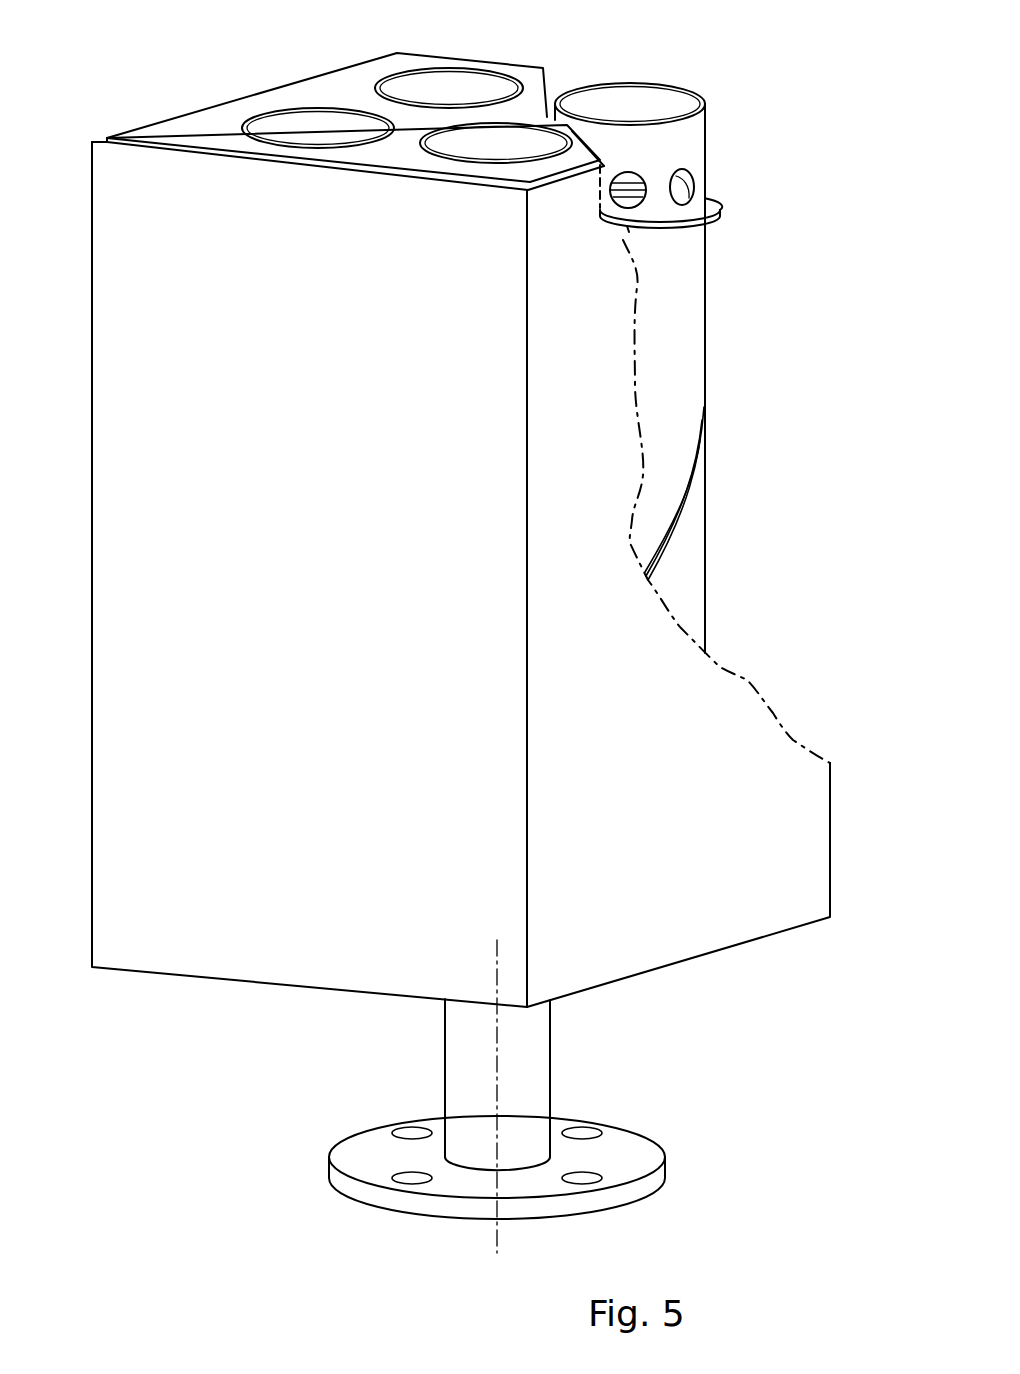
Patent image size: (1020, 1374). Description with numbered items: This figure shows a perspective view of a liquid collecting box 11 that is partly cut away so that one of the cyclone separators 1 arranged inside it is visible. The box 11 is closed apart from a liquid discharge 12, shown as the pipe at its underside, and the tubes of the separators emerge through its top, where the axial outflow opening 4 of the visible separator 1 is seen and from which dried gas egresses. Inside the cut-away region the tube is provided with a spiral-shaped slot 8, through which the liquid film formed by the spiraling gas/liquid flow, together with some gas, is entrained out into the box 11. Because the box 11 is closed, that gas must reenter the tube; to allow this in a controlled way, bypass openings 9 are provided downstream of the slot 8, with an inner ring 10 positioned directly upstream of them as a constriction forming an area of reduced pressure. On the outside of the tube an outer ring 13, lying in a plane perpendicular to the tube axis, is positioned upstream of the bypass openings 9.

The cyclone separator 1 is at (737, 337).
The axial outflow opening 4 is at (652, 110).
The spiral-shaped slot 8 is at (702, 473).
The bypass openings 9 is at (682, 187).
The inner ring 10 is at (647, 185).
The liquid collecting box 11 is at (200, 128).
The liquid discharge 12 is at (551, 1061).
The outer ring 13 is at (721, 207).